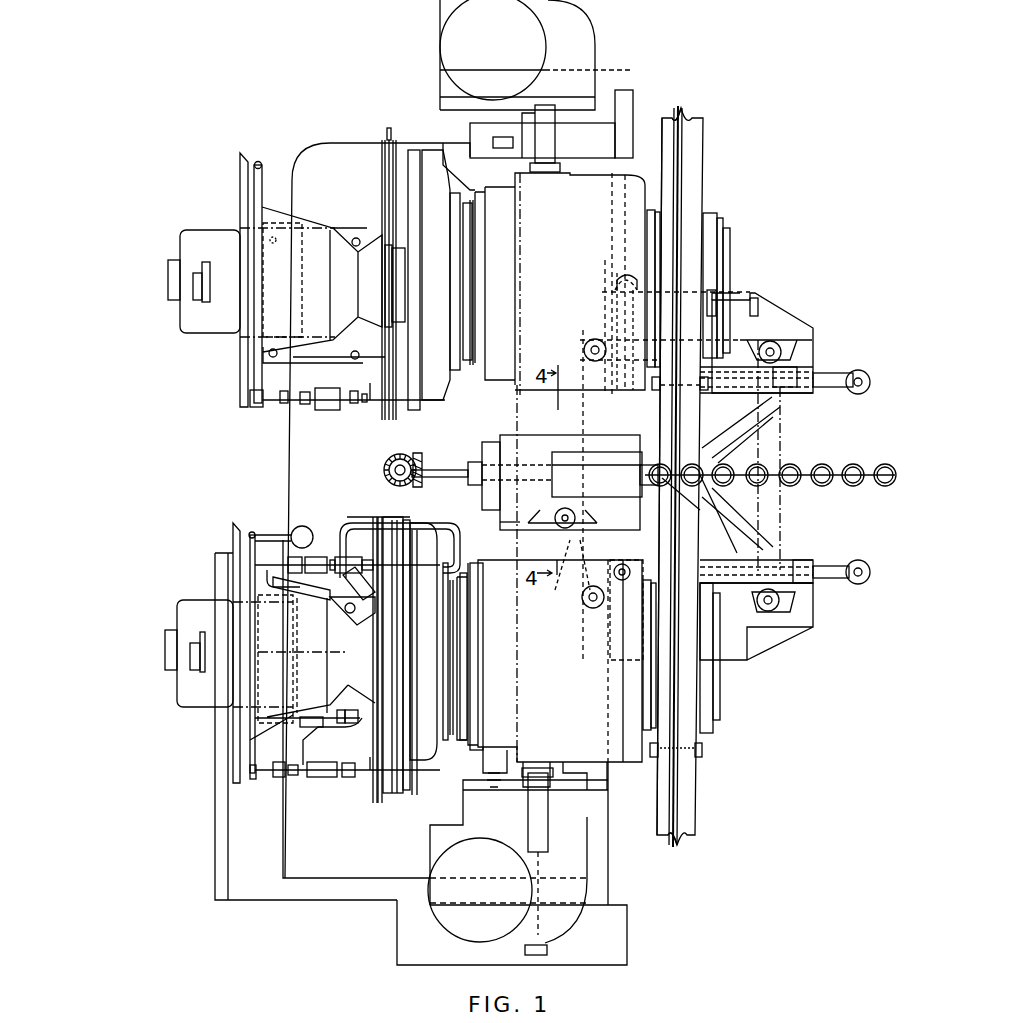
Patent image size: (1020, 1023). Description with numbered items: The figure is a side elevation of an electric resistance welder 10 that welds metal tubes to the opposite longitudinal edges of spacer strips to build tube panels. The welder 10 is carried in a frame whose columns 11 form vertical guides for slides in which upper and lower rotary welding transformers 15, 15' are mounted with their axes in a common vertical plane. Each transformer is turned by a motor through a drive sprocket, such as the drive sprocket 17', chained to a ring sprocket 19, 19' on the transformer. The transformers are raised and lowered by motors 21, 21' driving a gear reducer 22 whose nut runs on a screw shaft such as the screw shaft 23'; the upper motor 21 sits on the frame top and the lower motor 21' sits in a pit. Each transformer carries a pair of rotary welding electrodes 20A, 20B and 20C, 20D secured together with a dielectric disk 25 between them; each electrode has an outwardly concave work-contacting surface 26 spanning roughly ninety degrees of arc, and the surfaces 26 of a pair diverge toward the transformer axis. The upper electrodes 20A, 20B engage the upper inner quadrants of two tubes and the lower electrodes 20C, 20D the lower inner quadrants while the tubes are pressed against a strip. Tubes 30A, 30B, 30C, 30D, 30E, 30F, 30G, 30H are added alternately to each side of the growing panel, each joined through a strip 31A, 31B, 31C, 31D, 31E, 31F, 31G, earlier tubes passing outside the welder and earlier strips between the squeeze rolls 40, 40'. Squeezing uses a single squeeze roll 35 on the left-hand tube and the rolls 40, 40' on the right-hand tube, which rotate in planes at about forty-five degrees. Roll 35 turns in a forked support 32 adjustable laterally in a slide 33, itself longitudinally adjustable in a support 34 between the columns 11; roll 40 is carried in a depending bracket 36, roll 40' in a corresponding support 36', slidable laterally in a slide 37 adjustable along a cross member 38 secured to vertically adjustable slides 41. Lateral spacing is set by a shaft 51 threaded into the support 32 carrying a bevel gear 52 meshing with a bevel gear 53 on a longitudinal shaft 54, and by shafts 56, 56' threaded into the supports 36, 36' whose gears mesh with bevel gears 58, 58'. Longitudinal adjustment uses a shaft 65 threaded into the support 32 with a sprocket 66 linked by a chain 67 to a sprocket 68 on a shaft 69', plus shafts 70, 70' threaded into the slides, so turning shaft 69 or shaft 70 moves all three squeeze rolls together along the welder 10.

The electric resistance welder 10 is at (746, 245).
The columns 11 is at (333, 157).
The rotary welding transformer 15 is at (320, 281).
The rotary welding transformer 15' is at (324, 668).
The drive sprocket 17' is at (317, 652).
The ring sprocket 19 is at (391, 260).
The ring sprocket 19' is at (377, 642).
The welding electrode 20A is at (670, 112).
The welding electrode 20B is at (705, 140).
The welding electrode 20C is at (655, 795).
The welding electrode 20D is at (695, 785).
The motor 21 is at (493, 50).
The motor 21' is at (507, 890).
The gear reducer 22 is at (583, 40).
The screw shaft 23' is at (550, 851).
The disk of dielectric material 25 is at (683, 176).
The work-contacting surface 26 is at (690, 103).
The metal tube 30A is at (692, 475).
The metal tube 30B is at (800, 470).
The metal tube 30C is at (825, 465).
The metal tube 30D is at (775, 530).
The bead 30E is at (855, 465).
The bead 30F is at (725, 520).
The bead 30G is at (890, 465).
The bead 30H is at (662, 463).
The metal spacer strip 31A is at (760, 478).
The metal spacer strip 31B is at (805, 482).
The metal spacer strip 31C is at (745, 470).
The link 31D is at (835, 482).
The link 31E is at (735, 440).
The link 31F is at (870, 482).
The link 31G is at (668, 500).
The forked support 32 is at (535, 440).
The slide 33 is at (500, 497).
The support 34 is at (505, 522).
The squeeze roll 35 is at (575, 462).
The depending bracket 36 is at (762, 297).
The support 36' is at (756, 627).
The slide 37 is at (797, 350).
The cross member 38 is at (770, 305).
The squeeze roll 40 is at (773, 365).
The squeeze roll 40' is at (784, 559).
The slide 41 is at (630, 315).
The shaft 51 is at (435, 470).
The bevel gear 52 is at (419, 453).
The bevel gear 53 is at (388, 470).
The shaft 54 is at (388, 460).
The shaft 56 is at (850, 362).
The shaft 56' is at (860, 586).
The bevel gear 58 is at (880, 379).
The bevel gear 58' is at (877, 572).
The shaft 65 is at (560, 528).
The sprocket 66 is at (558, 510).
The chain 67 is at (556, 588).
The sprocket 68 is at (582, 600).
The shaft 69 is at (579, 347).
The shaft 69' is at (587, 621).
The shaft 70 is at (809, 322).
The shaft 70' is at (805, 626).